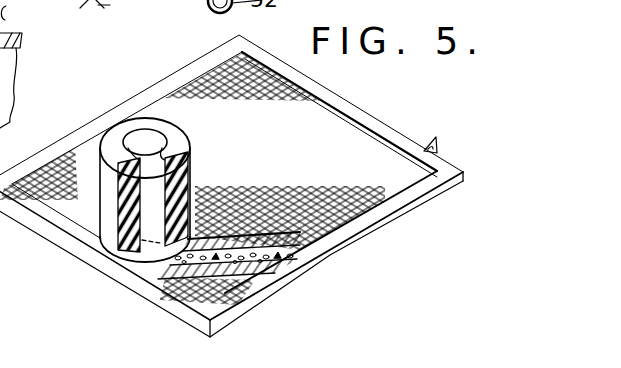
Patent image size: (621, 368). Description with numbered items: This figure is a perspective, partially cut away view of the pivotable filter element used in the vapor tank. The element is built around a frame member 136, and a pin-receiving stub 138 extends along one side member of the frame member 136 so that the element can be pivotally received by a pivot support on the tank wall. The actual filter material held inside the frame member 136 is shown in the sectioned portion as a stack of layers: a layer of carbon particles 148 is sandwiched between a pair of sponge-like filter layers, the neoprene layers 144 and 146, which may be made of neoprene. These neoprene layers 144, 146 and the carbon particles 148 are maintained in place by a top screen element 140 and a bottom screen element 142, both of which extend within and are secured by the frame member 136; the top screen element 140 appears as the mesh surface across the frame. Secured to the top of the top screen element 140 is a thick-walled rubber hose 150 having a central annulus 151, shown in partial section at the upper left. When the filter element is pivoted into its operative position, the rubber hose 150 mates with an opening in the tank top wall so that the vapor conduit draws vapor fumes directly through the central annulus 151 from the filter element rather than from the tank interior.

The frame member 136 is at (346, 245).
The pin-receiving stub 138 is at (382, 113).
The top screen element 140 is at (376, 214).
The bottom screen element 142 is at (242, 299).
The neoprene layer 144 is at (300, 250).
The neoprene layer 146 is at (278, 270).
The layer of carbon particles 148 is at (302, 260).
The thick-walled rubber hose 150 is at (104, 184).
The central annulus 151 is at (124, 148).